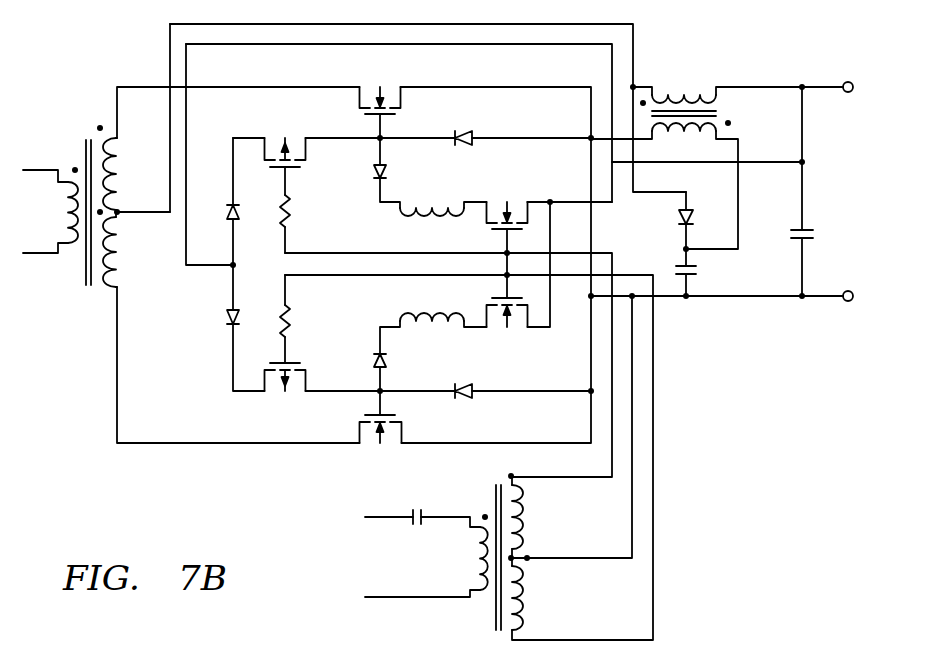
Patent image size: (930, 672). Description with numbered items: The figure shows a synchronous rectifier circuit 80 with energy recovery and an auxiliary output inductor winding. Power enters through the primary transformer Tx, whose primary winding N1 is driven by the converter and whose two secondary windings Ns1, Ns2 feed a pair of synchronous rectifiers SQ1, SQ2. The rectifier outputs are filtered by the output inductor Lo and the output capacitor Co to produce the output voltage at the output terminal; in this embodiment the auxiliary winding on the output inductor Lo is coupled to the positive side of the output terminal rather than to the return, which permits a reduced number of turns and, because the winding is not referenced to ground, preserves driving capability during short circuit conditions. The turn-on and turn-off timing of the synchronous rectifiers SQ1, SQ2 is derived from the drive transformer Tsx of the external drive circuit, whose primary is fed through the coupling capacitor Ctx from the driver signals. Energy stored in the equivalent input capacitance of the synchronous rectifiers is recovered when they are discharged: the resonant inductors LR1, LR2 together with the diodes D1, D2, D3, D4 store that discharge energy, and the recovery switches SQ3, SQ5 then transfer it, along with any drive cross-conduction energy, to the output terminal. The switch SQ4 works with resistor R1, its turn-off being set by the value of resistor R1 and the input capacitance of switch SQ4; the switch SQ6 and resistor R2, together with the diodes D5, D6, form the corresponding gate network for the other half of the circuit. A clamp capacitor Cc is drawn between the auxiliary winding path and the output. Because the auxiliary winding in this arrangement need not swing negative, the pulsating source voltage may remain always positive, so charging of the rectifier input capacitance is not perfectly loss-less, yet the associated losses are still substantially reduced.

The resonant switching power converter circuit 80 is at (440, 332).
The primary transformer Tx is at (96, 191).
The primary winding N1 is at (57, 205).
The first secondary winding Ns1 is at (126, 167).
The second secondary winding Ns2 is at (126, 248).
The synchronous rectifier SQ1 is at (380, 87).
The synchronous rectifier SQ2 is at (381, 444).
The recovery switch SQ3 is at (507, 237).
The switch SQ4 is at (285, 140).
The recovery switch SQ5 is at (507, 328).
The auxiliary switch SQ6 is at (285, 390).
The diode D1 is at (465, 126).
The diode D2 is at (366, 171).
The diode D3 is at (464, 404).
The diode D4 is at (366, 361).
The diode D5 is at (218, 214).
The diode D6 is at (218, 317).
The resistor R1 is at (274, 211).
The gate resistor R2 is at (274, 321).
The resonant inductor LR1 is at (432, 227).
The resonant inductor LR2 is at (432, 304).
The output inductor Lo is at (685, 98).
The output capacitor Co is at (788, 236).
The clamp capacitor Cc is at (699, 247).
The transformer Tsx is at (494, 542).
The drive coupling capacitor Ctx is at (416, 502).